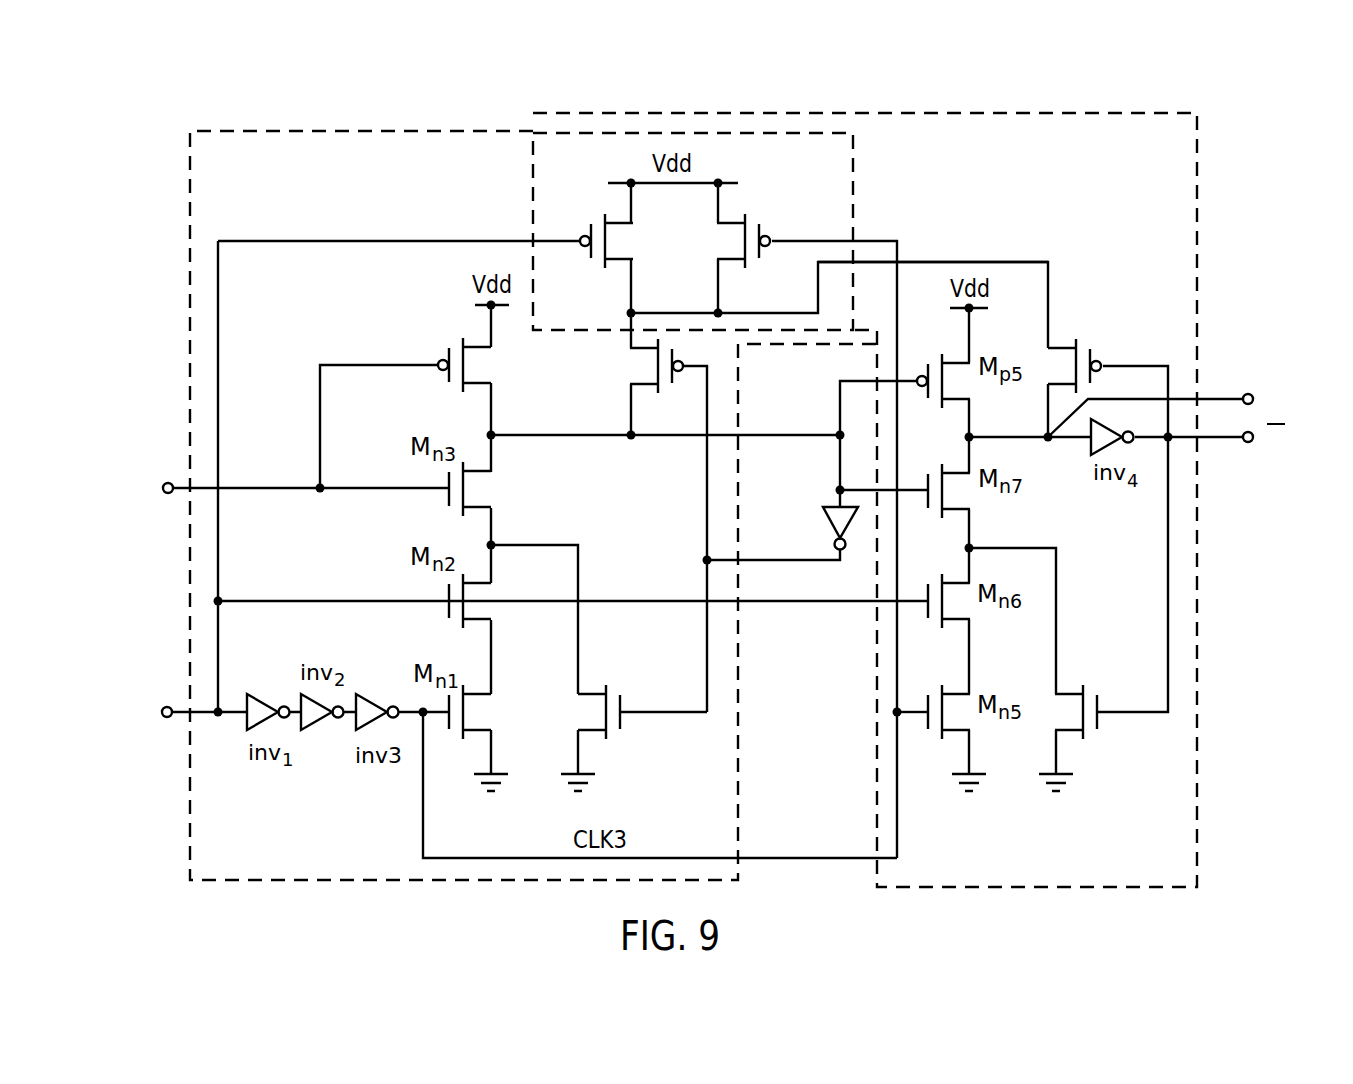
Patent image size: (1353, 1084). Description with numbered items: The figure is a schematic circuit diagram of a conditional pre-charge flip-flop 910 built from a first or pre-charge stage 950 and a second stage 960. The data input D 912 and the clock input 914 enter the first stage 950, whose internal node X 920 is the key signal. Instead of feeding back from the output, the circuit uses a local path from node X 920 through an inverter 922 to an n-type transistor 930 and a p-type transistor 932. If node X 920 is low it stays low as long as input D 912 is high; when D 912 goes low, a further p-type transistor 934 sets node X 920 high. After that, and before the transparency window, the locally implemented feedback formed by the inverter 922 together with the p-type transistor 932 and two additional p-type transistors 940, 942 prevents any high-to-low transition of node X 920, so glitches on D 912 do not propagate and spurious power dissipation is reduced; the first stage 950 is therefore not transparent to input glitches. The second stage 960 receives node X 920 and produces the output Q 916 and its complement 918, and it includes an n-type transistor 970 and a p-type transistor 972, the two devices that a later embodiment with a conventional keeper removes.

The flip-flop circuit 910 is at (1238, 134).
The input D 912 is at (146, 470).
The clock input CLK0 914 is at (137, 695).
The output Q 916 is at (1277, 383).
The inverted output Q-bar 918 is at (1272, 453).
The internal node X 920 is at (795, 389).
The inverter inv5 922 is at (805, 512).
The transistor Mn4 930 is at (637, 662).
The transistor Mp2 932 is at (592, 381).
The transistor Mp1 934 is at (404, 325).
The transistor Mp3 940 is at (571, 190).
The transistor Mp4 942 is at (782, 194).
The first or pre-charge stage 950 is at (350, 130).
The second stage 960 is at (962, 113).
The transistor Mn8 970 is at (1102, 658).
The transistor Mp6 972 is at (1113, 315).